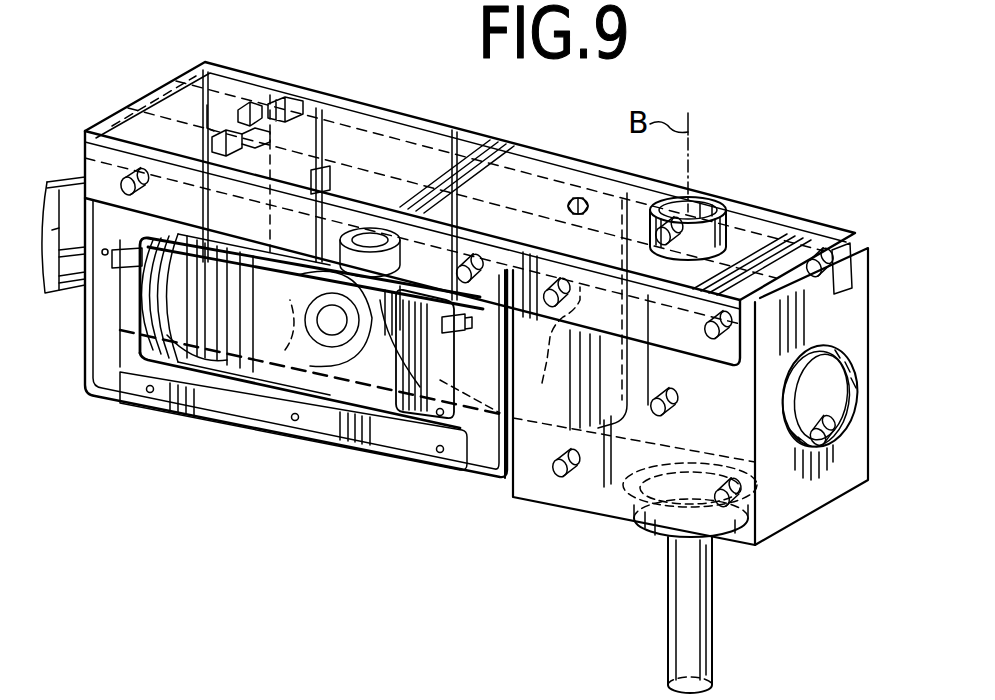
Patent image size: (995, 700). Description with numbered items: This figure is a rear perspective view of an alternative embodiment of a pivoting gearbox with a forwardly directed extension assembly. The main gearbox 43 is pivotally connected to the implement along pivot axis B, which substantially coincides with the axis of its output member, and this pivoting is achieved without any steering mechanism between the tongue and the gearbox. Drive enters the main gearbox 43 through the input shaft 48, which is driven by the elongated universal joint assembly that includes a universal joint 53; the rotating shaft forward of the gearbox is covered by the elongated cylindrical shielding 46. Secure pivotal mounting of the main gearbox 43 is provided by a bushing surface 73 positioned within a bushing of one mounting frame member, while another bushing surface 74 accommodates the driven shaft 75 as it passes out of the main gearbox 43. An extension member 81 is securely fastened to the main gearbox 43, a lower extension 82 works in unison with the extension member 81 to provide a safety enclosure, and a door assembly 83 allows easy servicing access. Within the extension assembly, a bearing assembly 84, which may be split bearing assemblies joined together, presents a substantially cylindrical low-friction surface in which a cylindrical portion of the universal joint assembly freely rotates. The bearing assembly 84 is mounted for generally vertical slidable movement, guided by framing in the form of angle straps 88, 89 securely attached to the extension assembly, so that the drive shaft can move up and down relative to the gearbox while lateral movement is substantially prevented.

The main gearbox 43 is at (857, 313).
The cylindrical shielding 46 is at (60, 182).
The input shaft 48 is at (554, 371).
The universal joint 53 is at (440, 380).
The bushing surface 73 is at (703, 212).
The bushing surface 74 is at (648, 541).
The driven shaft 75 is at (680, 603).
The extension member 81 is at (268, 80).
The lower extension 82 is at (107, 393).
The door assembly 83 is at (385, 400).
The bearing assembly 84 is at (330, 197).
The angle strap 88 is at (318, 132).
The angle strap 89 is at (183, 297).